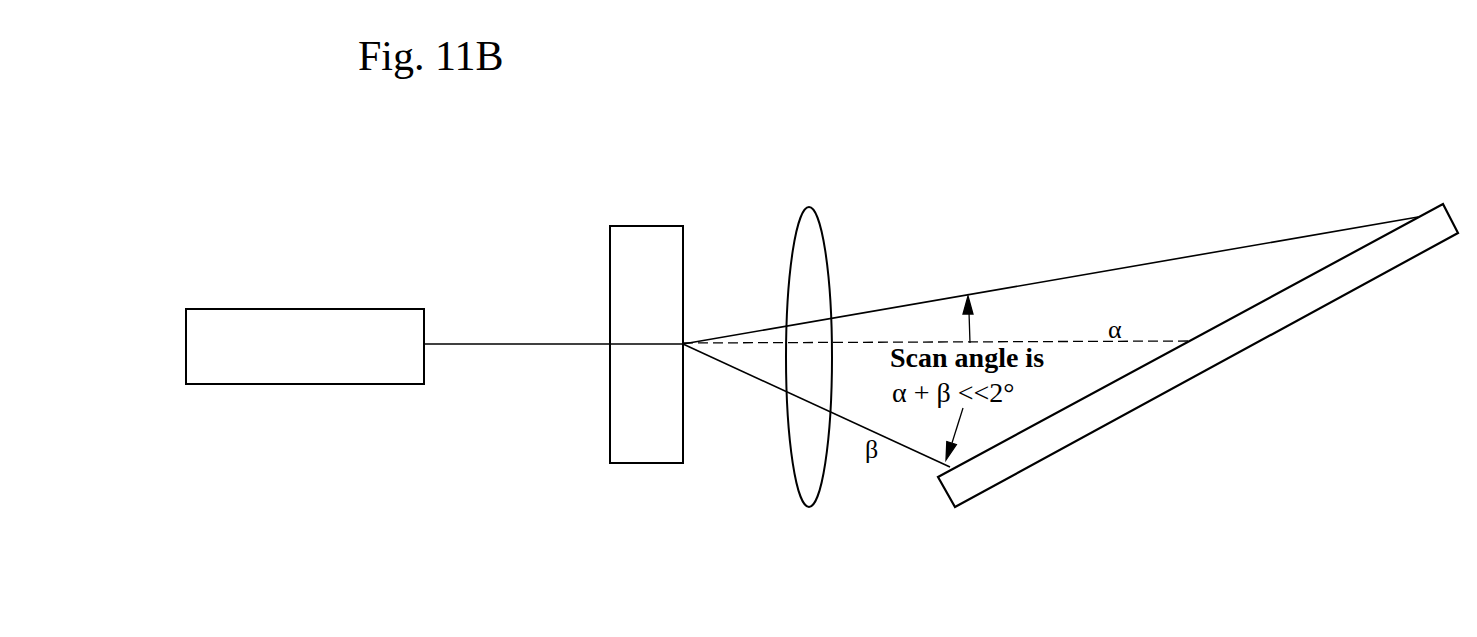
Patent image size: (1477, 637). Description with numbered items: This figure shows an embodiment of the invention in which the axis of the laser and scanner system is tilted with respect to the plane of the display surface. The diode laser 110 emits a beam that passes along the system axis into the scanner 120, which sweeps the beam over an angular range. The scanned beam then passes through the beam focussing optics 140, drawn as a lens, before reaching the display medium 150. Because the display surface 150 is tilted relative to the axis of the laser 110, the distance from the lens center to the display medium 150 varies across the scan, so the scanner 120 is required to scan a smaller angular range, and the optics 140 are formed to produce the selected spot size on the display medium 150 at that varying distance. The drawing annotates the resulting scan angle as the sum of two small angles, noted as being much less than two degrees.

The laser 110 is at (320, 363).
The scanner 120 is at (620, 290).
The beam focussing optics 140 is at (747, 388).
The display medium 150 is at (1198, 371).